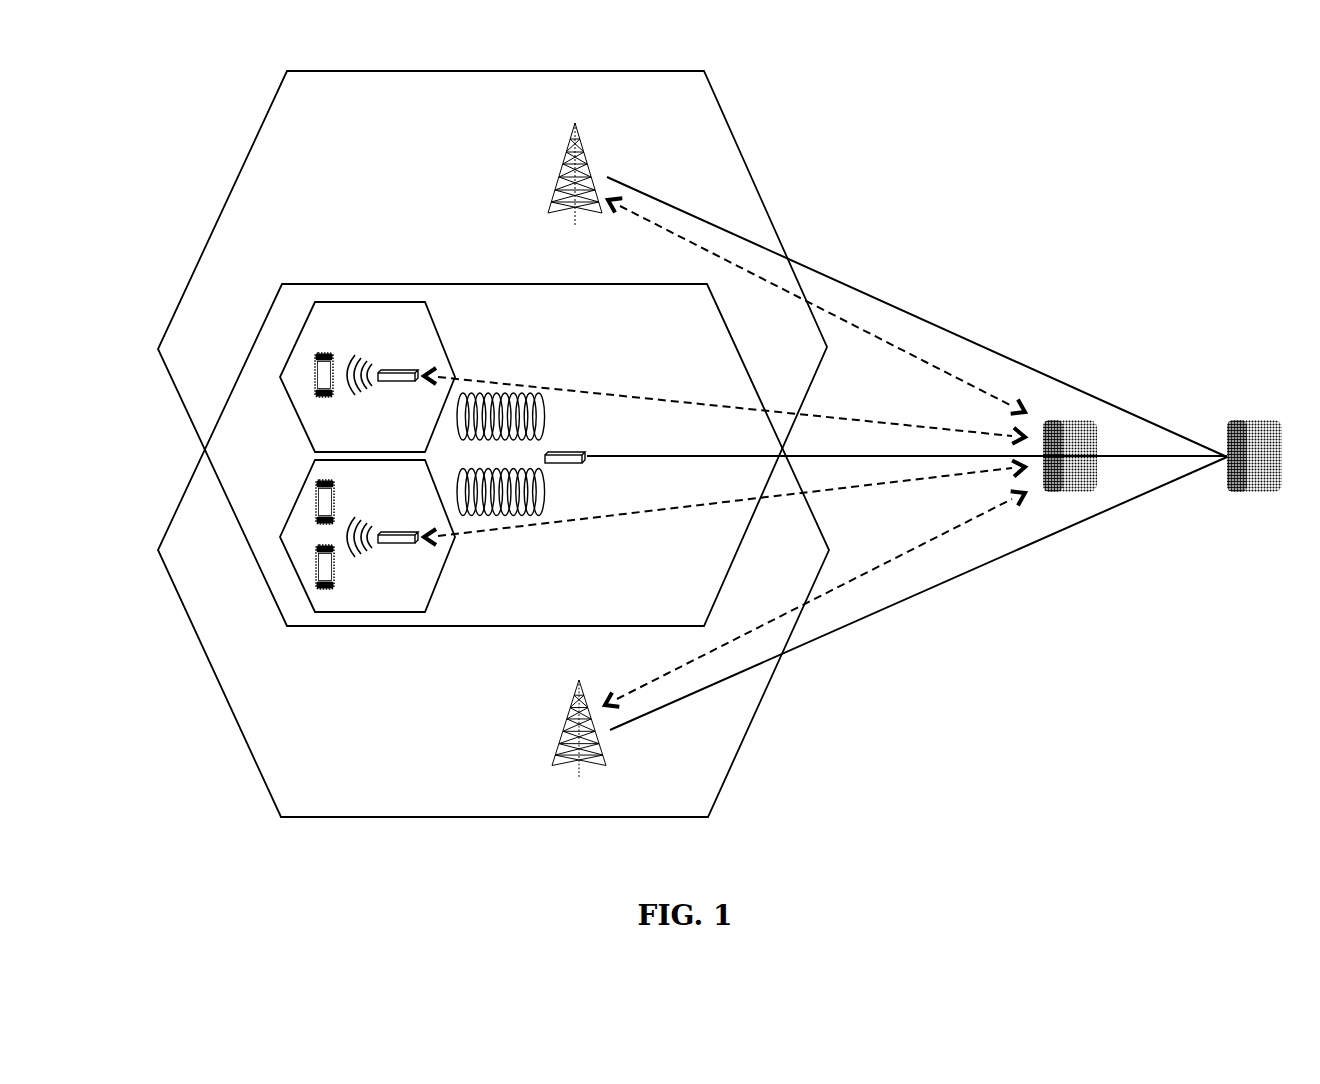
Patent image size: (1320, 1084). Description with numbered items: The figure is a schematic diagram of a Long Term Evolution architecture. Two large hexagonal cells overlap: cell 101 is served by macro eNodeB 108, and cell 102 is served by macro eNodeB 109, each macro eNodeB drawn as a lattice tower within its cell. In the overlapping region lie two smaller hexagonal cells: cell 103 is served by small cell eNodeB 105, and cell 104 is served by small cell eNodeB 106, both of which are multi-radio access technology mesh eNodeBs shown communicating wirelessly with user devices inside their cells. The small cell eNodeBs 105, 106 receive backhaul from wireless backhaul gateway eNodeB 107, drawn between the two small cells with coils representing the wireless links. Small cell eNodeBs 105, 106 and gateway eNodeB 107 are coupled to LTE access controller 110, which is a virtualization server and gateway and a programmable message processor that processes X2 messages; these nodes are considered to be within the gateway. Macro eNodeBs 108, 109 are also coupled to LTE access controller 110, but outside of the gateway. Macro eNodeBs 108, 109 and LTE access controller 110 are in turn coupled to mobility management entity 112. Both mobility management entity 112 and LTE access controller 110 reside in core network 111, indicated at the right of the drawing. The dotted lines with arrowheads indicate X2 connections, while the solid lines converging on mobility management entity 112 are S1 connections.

The cell 101 is at (240, 168).
The cell 102 is at (172, 518).
The cell 103 is at (448, 347).
The cell 104 is at (450, 562).
The small cell eNodeB 105 is at (383, 363).
The small cell eNodeB 106 is at (383, 527).
The wireless backhaul gateway eNodeB 107 is at (555, 448).
The macro eNodeB 108 is at (588, 137).
The macro eNodeB 109 is at (588, 683).
The LTE access controller 110 is at (1077, 418).
The core network 111 is at (1185, 330).
The mobility management entity 112 is at (1263, 418).